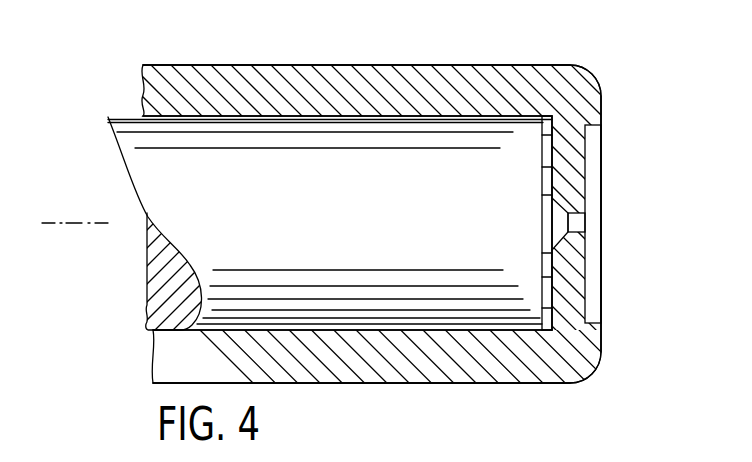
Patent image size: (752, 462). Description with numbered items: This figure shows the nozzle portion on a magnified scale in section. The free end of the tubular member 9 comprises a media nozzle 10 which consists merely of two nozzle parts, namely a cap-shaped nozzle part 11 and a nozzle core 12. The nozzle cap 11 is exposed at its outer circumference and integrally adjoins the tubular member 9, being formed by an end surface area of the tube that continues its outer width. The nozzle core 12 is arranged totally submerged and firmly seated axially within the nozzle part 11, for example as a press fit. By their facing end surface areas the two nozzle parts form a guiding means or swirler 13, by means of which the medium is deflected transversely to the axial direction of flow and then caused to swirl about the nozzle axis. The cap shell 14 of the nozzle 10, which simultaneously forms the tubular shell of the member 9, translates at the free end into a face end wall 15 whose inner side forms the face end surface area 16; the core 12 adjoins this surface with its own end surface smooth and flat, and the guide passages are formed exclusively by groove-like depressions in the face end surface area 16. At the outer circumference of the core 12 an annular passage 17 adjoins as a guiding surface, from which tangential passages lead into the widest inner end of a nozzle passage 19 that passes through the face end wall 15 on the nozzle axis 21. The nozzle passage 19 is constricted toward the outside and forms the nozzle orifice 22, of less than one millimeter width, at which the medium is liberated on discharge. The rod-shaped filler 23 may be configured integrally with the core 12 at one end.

The tubular member 9 is at (352, 56).
The media nozzle 10 is at (622, 80).
The cap-shaped nozzle part 11 is at (590, 371).
The nozzle core 12 is at (420, 140).
The swirler 13 is at (560, 302).
The cap shell 14 is at (308, 110).
The face end wall 15 is at (582, 146).
The face end surface area 16 is at (542, 266).
The annular passage 17 is at (553, 116).
The nozzle passage 19 is at (560, 222).
The nozzle axis 21 is at (74, 222).
The nozzle orifice 22 is at (587, 221).
The filler 23 is at (150, 236).